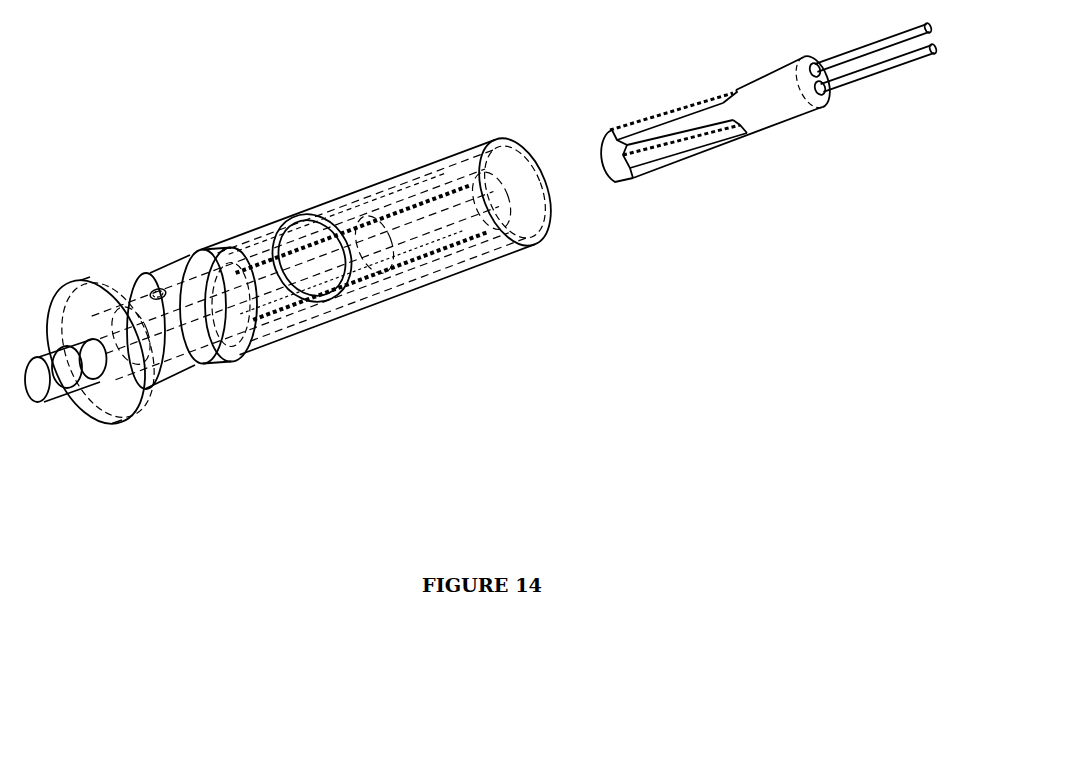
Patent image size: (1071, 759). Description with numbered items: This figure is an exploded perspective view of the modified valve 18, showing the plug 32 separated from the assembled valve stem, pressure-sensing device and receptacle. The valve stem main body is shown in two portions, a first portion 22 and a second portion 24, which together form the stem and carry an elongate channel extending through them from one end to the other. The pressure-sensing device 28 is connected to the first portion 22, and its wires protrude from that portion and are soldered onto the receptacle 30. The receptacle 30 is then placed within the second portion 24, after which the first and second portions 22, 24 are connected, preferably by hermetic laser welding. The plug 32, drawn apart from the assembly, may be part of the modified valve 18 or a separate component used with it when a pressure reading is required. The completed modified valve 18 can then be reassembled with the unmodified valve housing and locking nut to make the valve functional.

The modified valve 18 is at (295, 287).
The first portion 22 is at (183, 262).
The second portion 24 is at (440, 270).
The pressure-sensing device 28 is at (44, 383).
The receptacle 30 is at (420, 195).
The plug 32 is at (771, 172).